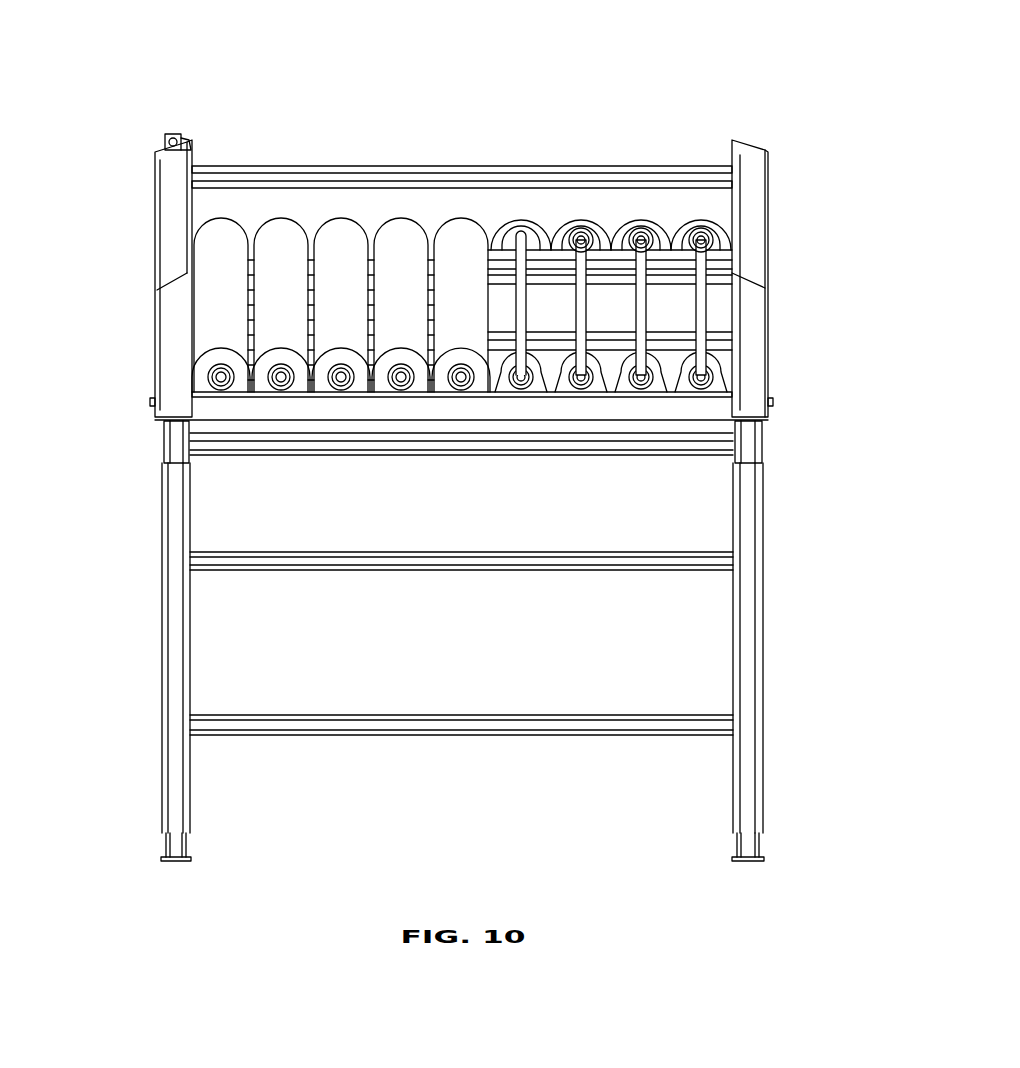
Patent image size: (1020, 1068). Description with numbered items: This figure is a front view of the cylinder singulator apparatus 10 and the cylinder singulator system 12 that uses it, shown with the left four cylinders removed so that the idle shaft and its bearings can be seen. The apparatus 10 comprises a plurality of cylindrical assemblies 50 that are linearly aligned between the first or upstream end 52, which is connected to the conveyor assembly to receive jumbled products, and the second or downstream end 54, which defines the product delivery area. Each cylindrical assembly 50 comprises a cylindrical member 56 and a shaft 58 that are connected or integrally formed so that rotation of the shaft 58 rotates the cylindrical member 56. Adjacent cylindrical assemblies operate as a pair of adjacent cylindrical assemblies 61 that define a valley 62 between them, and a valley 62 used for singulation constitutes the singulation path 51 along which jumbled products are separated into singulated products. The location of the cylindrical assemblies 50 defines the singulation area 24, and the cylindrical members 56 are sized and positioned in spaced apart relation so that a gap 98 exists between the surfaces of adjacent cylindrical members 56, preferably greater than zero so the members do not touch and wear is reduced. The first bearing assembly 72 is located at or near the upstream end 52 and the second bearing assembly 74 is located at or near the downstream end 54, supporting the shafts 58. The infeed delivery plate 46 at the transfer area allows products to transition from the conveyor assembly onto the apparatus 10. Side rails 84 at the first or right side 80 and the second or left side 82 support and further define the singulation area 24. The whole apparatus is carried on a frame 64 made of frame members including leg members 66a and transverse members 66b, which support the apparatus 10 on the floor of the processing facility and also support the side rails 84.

The cylinder singulator apparatus 10 is at (771, 273).
The cylinder singulator system 12 is at (640, 100).
The singulation area 24 is at (122, 252).
The infeed delivery plate 46 is at (548, 205).
The cylindrical assembly 50 is at (214, 307).
The singulation path 51 is at (312, 316).
The first or upstream end 52 is at (147, 158).
The second or downstream end 54 is at (146, 415).
The cylindrical member 56 is at (463, 248).
The shaft 58 is at (703, 309).
The pair of adjacent cylindrical assemblies 61 is at (399, 289).
The valley 62 is at (251, 229).
The frame 64 is at (474, 641).
The leg members 66a is at (175, 614).
The transverse members 66b is at (475, 456).
The first bearing assembly 72 is at (700, 233).
The second bearing assembly 74 is at (717, 375).
The first or right side 80 is at (157, 124).
The second or left side 82 is at (769, 128).
The side rail 84 is at (172, 347).
The gap 98 is at (245, 330).